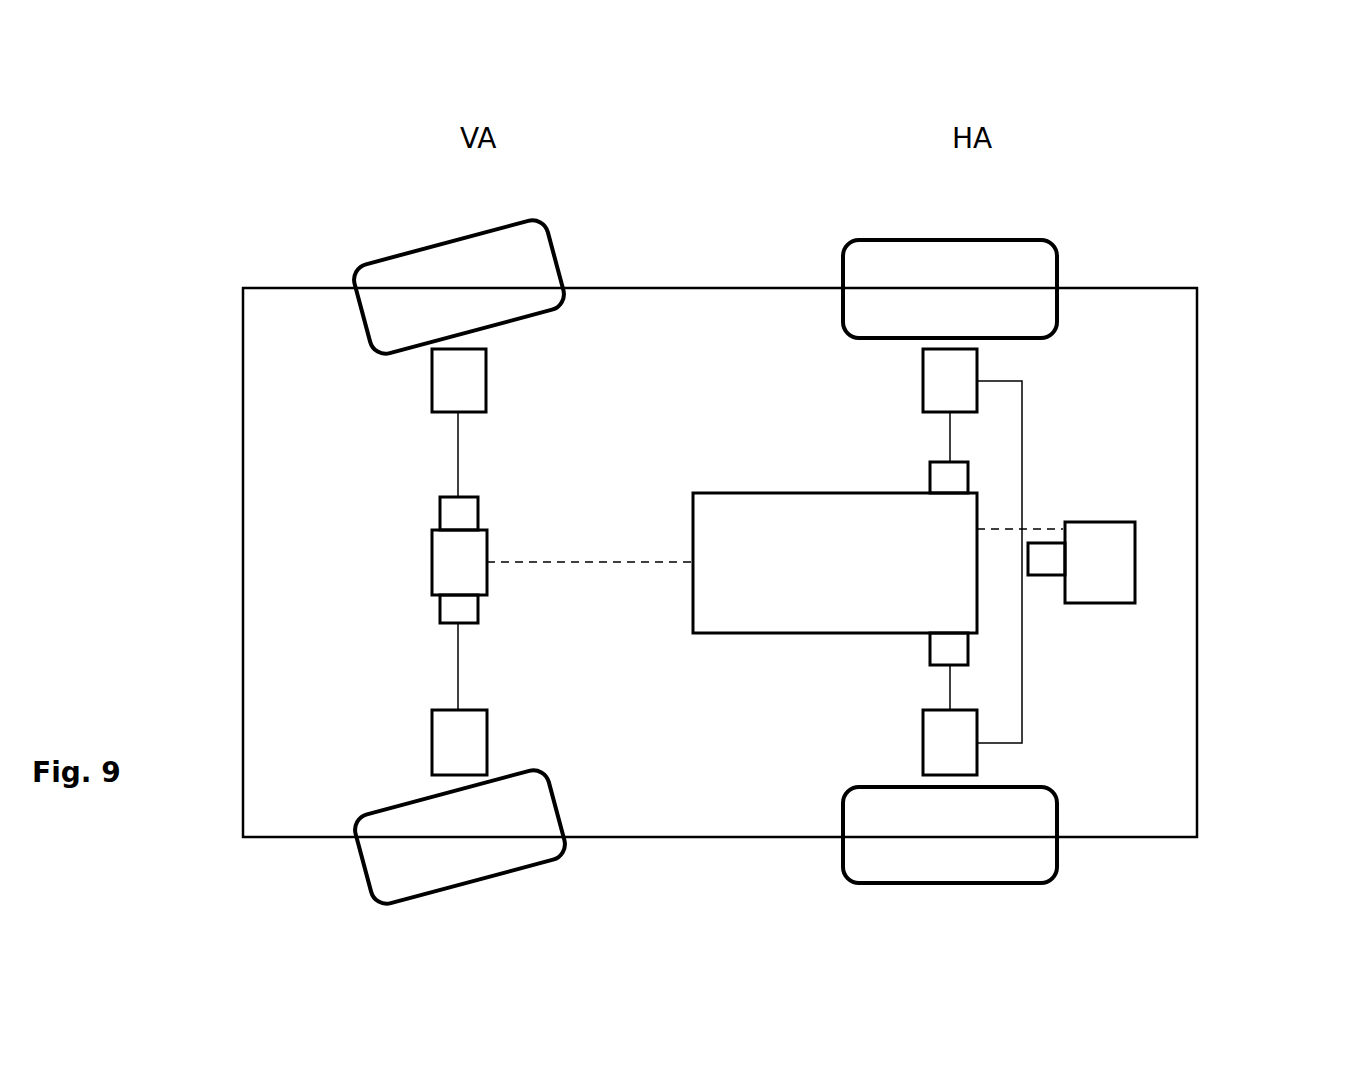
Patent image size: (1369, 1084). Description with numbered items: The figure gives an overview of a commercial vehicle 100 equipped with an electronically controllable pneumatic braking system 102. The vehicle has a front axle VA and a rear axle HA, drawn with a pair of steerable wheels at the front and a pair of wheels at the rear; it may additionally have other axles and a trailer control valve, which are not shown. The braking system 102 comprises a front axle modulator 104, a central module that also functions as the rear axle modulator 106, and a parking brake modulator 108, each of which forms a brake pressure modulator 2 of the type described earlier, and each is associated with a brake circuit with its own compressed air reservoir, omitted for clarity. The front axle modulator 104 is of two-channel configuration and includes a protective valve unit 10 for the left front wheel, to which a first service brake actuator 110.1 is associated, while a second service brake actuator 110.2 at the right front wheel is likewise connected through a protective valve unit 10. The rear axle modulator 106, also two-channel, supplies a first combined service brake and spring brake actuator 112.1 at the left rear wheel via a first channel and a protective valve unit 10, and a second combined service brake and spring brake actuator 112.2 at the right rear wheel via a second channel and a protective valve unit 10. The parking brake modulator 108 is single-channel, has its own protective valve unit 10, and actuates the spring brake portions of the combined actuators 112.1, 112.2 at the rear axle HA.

The commercial vehicle 100 is at (185, 178).
The electronically controllable pneumatic braking system 102 is at (262, 388).
The brake pressure modulator 2 is at (808, 563).
The front axle modulator 104 is at (420, 562).
The rear axle modulator 106 is at (835, 563).
The parking brake modulator 108 is at (1149, 563).
The protective valve unit 10 is at (428, 510).
The first service brake actuator 110.1 is at (420, 742).
The second service brake actuator 110.2 is at (420, 382).
The first combined service brake and spring brake actuator 112.1 is at (911, 742).
The second combined service brake and spring brake actuator 112.2 is at (911, 382).